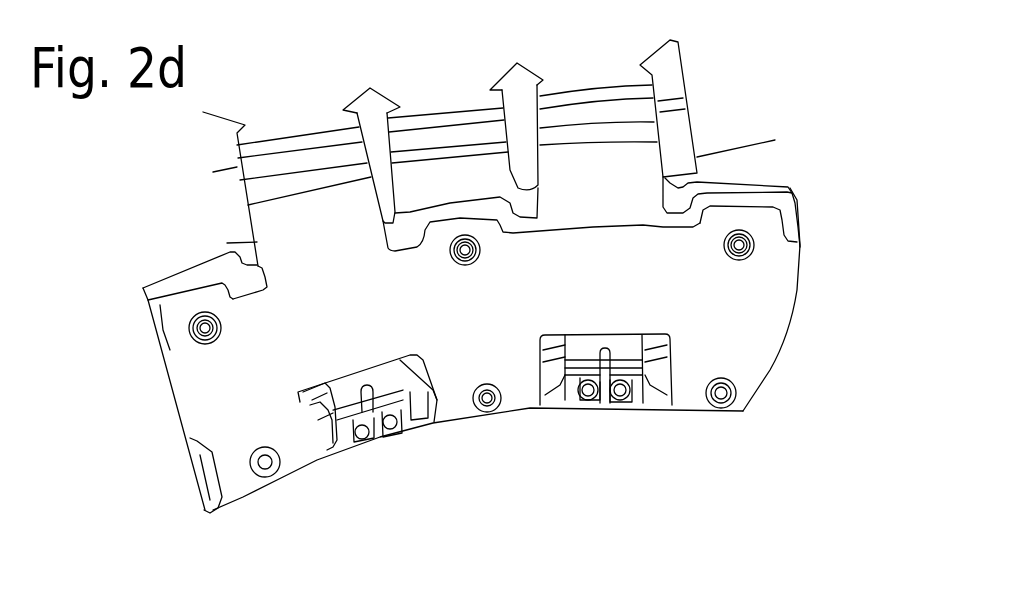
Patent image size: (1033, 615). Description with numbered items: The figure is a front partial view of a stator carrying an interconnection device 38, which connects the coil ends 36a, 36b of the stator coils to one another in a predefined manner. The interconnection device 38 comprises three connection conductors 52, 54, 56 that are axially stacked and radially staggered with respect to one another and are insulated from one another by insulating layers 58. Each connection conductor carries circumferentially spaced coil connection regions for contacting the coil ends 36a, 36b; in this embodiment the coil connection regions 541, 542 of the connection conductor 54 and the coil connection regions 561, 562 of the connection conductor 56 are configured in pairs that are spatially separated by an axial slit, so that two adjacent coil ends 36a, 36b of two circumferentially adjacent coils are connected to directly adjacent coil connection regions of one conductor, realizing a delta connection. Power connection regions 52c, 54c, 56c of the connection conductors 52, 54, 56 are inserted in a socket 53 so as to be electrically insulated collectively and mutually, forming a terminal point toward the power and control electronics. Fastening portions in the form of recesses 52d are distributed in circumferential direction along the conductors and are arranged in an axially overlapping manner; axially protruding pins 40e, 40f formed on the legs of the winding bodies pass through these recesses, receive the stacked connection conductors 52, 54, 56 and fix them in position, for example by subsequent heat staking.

The interconnection device 38 is at (772, 491).
The connection conductor 52 is at (197, 398).
The connection conductor 54 is at (163, 300).
The connection conductor 56 is at (168, 283).
The power connection region 52c is at (273, 228).
The power connection region 54c is at (573, 160).
The power connection region 56c is at (416, 177).
The fastening portion recess 52d is at (720, 378).
The socket 53 is at (684, 162).
The insulating layers 58 is at (337, 225).
The axially protruding pin 40e is at (733, 246).
The axially protruding pin 40f is at (715, 385).
The coil end 36a is at (390, 437).
The coil end 36b is at (363, 440).
The coil connection region 541 is at (350, 422).
The coil connection region 542 is at (400, 420).
The coil connection region 561 is at (572, 377).
The coil connection region 562 is at (632, 377).